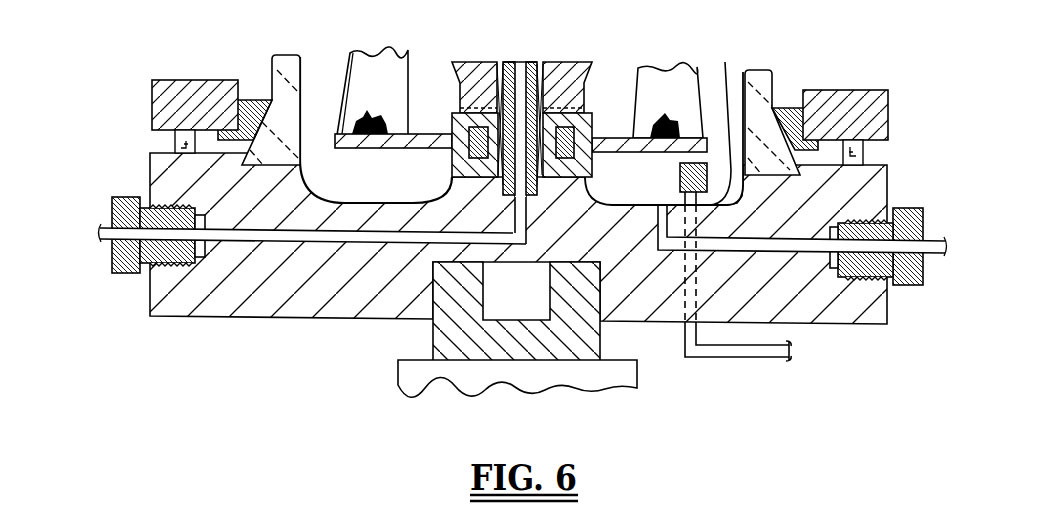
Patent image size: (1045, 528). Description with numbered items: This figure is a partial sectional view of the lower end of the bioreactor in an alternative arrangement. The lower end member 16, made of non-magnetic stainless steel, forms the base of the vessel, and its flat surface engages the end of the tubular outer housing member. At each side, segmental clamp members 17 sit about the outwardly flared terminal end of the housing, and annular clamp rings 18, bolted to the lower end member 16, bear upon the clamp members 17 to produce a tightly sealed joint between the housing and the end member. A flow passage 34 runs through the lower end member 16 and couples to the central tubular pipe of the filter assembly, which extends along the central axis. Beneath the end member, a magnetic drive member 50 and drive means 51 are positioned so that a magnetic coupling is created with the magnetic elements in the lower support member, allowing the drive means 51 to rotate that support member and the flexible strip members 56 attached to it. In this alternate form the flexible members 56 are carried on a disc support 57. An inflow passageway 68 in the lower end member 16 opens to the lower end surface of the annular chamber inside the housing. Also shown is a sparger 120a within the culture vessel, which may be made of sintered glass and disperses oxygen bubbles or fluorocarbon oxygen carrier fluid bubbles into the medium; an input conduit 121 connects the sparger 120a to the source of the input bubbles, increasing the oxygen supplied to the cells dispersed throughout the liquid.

The lower end member 16 is at (307, 317).
The segmental clamp member 17 is at (792, 108).
The annular clamp ring 18 is at (853, 92).
The flow passage 34 is at (267, 235).
The magnetic drive member 50 is at (455, 333).
The drive means 51 is at (432, 377).
The flexible strip member 56 is at (360, 95).
The disc support 57 is at (387, 146).
The inflow passageway 68 is at (787, 245).
The sparger 120a is at (725, 62).
The input conduit 121 is at (725, 357).